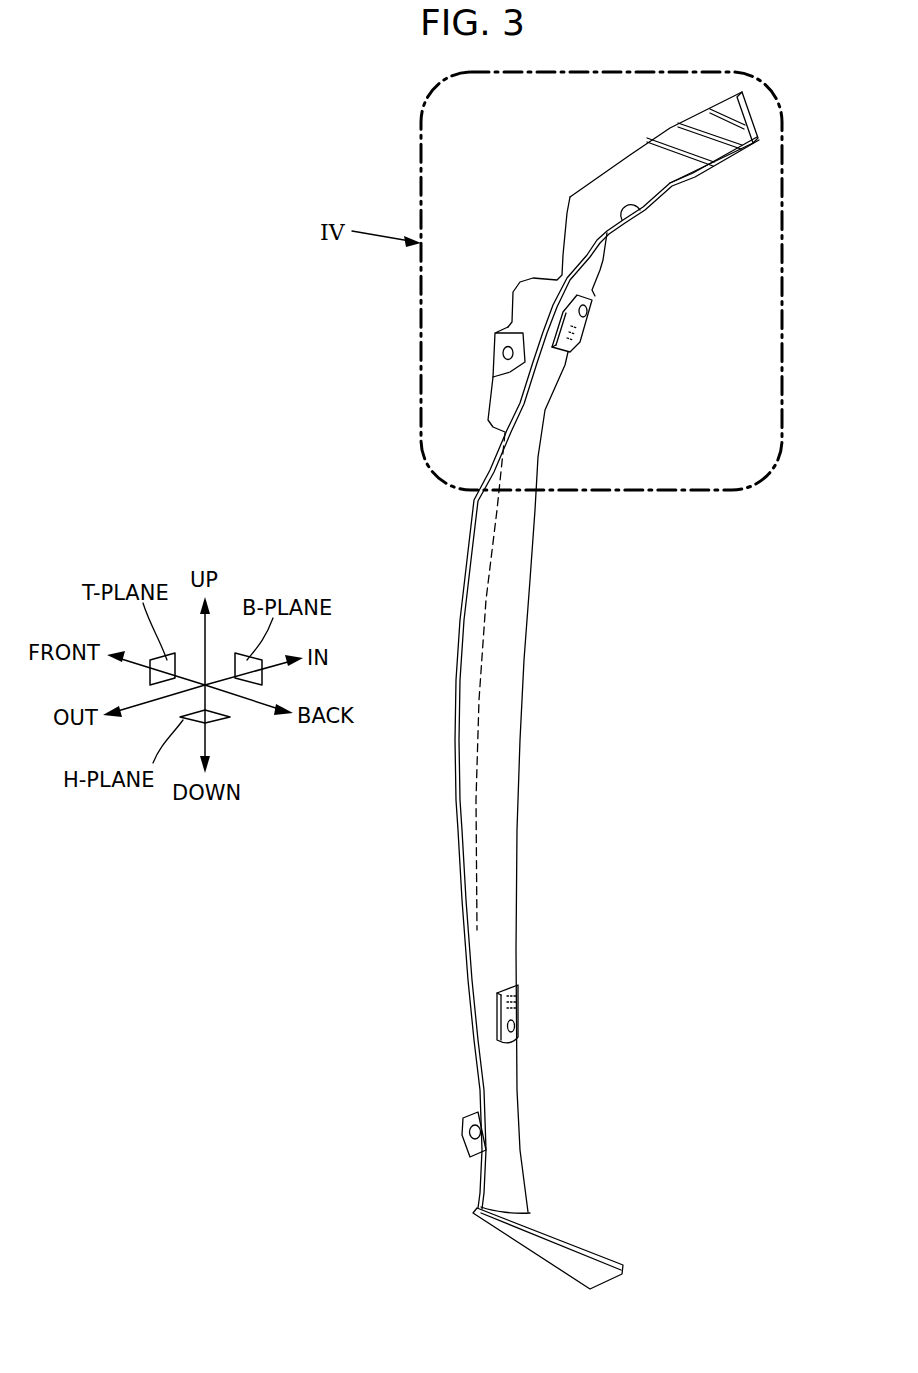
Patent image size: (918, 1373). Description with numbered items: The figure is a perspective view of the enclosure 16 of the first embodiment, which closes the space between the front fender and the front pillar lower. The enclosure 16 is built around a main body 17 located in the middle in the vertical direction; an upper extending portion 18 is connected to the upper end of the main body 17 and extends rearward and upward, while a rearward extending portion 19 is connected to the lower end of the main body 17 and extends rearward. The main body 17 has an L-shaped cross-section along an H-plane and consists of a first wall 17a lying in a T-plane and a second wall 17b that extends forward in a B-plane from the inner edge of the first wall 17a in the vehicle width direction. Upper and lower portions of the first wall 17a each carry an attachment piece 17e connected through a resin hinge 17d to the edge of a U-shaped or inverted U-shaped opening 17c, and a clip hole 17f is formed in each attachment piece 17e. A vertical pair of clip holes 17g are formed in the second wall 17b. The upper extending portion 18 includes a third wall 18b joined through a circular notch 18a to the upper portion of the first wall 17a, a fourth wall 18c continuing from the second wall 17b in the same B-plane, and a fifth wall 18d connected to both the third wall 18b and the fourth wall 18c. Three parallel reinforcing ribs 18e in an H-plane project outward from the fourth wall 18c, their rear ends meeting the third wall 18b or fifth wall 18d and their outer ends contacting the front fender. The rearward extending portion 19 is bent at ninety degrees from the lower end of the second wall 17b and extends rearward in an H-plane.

The enclosure 16 is at (557, 713).
The main body 17 is at (534, 616).
The first wall 17a is at (503, 777).
The second wall 17b is at (478, 749).
The opening 17c is at (557, 332).
The resin hinge 17d is at (567, 353).
The attachment piece 17e is at (582, 333).
The clip hole 17f is at (588, 312).
The clip hole 17g is at (498, 357).
The upper extending portion 18 is at (704, 181).
The circular notch 18a is at (641, 210).
The third wall 18b is at (725, 155).
The fourth wall 18c is at (623, 177).
The fifth wall 18d is at (752, 115).
The reinforcing ribs 18e is at (708, 108).
The rearward extending portion 19 is at (610, 1245).